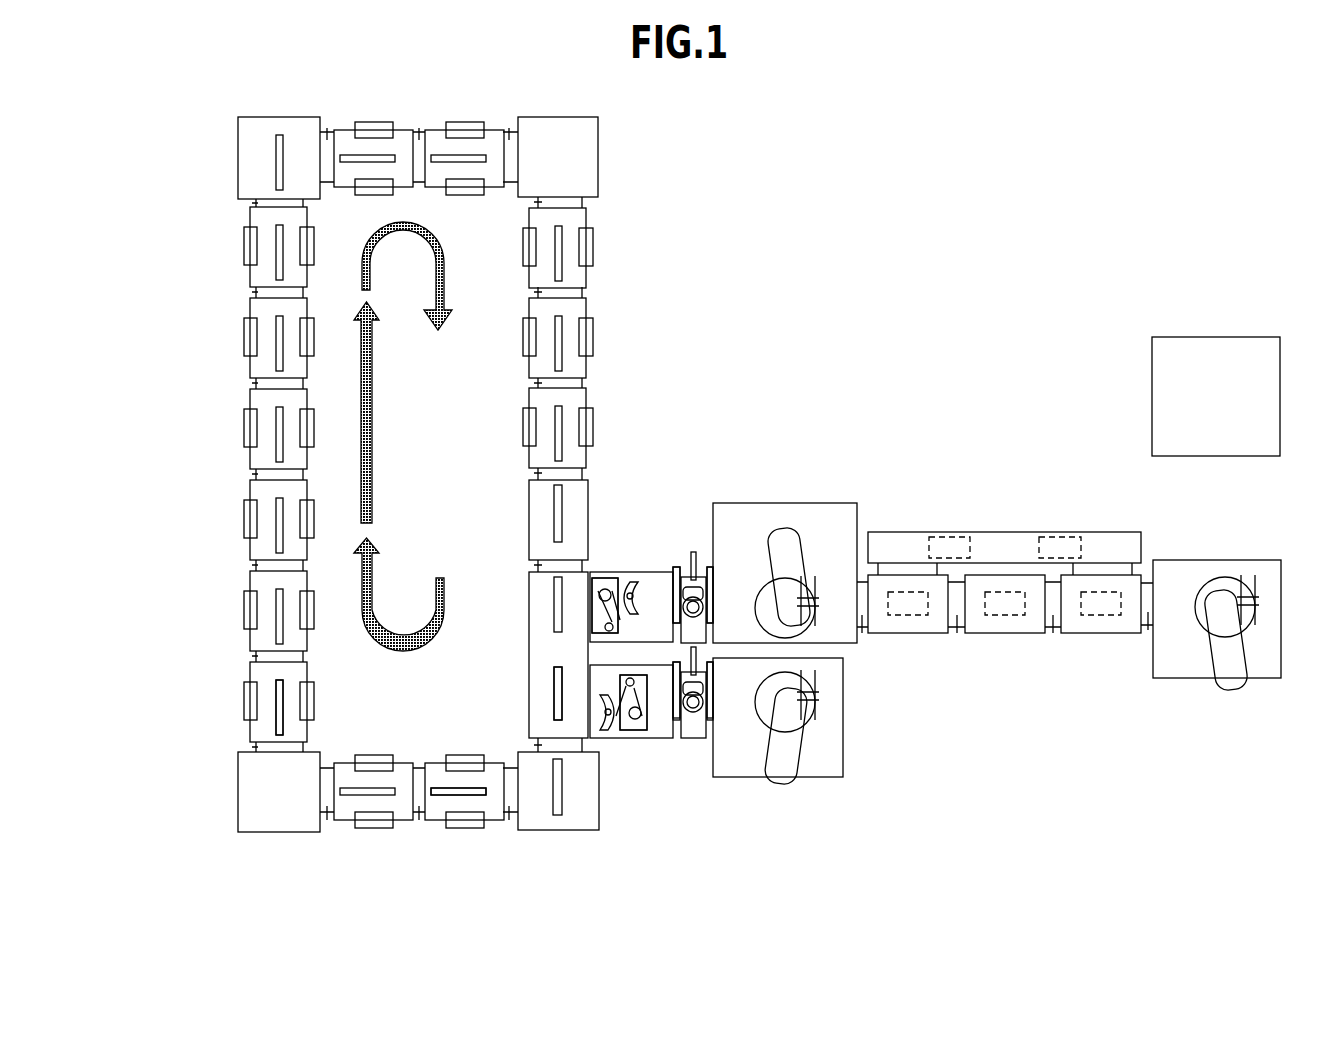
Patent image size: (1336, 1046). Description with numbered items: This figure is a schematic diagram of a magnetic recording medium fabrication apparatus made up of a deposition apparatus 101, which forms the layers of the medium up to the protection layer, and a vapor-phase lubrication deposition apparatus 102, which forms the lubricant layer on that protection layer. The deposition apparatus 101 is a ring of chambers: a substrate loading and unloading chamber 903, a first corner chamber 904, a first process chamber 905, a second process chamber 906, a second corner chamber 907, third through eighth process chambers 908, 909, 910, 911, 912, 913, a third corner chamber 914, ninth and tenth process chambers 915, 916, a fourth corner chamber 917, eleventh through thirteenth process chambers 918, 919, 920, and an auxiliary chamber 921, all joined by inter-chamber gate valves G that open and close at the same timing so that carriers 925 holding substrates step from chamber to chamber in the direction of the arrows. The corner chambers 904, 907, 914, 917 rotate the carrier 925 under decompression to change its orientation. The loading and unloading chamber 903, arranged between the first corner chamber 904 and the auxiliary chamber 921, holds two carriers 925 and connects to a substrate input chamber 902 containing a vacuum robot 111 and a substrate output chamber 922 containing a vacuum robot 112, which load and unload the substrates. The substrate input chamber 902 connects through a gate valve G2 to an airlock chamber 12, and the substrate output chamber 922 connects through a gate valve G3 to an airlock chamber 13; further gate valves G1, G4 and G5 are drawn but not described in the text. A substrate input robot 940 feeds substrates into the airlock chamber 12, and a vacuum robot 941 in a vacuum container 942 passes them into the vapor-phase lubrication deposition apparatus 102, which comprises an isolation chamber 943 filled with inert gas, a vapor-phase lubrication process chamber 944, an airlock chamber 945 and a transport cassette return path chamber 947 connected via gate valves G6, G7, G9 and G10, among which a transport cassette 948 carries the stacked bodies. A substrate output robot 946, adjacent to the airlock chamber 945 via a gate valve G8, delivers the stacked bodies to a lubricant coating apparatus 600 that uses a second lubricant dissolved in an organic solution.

The deposition apparatus 101 is at (186, 84).
The vapor-phase lubrication deposition apparatus 102 is at (948, 420).
The lubricant coating apparatus 600 is at (1213, 352).
The substrate input chamber 902 is at (620, 748).
The substrate loading and unloading chamber 903 is at (548, 645).
The first corner chamber 904 is at (573, 808).
The first process chamber 905 is at (438, 812).
The second process chamber 906 is at (345, 812).
The second corner chamber 907 is at (250, 798).
The third process chamber 908 is at (262, 669).
The fourth process chamber 909 is at (262, 578).
The fifth process chamber 910 is at (262, 487).
The sixth process chamber 911 is at (262, 396).
The seventh process chamber 912 is at (262, 305).
The eighth process chamber 913 is at (262, 214).
The third corner chamber 914 is at (250, 152).
The ninth process chamber 915 is at (343, 140).
The tenth process chamber 916 is at (492, 140).
The fourth corner chamber 917 is at (598, 152).
The eleventh process chamber 918 is at (575, 214).
The twelfth process chamber 919 is at (575, 304).
The thirteenth process chamber 920 is at (575, 394).
The auxiliary chamber 921 is at (547, 510).
The substrate output chamber 922 is at (611, 565).
The carrier 925 is at (277, 706).
The vacuum robot 111 is at (640, 738).
The vacuum robot 112 is at (642, 565).
The airlock chamber 12 is at (685, 740).
The airlock chamber 13 is at (693, 550).
The inter-chamber gate valve G is at (254, 203).
The gate G1 is at (708, 722).
The inter-chamber gate valve G2 is at (676, 722).
The inter-chamber gate valve G3 is at (676, 567).
The gate G4 is at (709, 567).
The gate G5 is at (863, 636).
The gate valve G6 is at (958, 636).
The gate valve G7 is at (1053, 636).
The gate valve G8 is at (1148, 634).
The gate valve G9 is at (1104, 568).
The gate valve G10 is at (903, 568).
The substrate input robot 940 is at (788, 768).
The vacuum robot 941 is at (788, 540).
The vacuum container 942 is at (835, 508).
The isolation chamber 943 is at (910, 626).
The vapor-phase lubrication process chamber 944 is at (1003, 626).
The airlock chamber 945 is at (1098, 626).
The substrate output robot 946 is at (1210, 592).
The transport cassette return path chamber 947 is at (993, 540).
The transport cassette 948 is at (1055, 540).